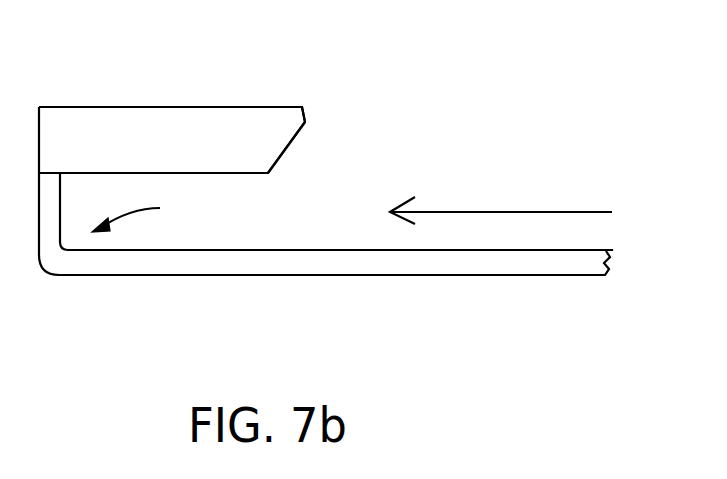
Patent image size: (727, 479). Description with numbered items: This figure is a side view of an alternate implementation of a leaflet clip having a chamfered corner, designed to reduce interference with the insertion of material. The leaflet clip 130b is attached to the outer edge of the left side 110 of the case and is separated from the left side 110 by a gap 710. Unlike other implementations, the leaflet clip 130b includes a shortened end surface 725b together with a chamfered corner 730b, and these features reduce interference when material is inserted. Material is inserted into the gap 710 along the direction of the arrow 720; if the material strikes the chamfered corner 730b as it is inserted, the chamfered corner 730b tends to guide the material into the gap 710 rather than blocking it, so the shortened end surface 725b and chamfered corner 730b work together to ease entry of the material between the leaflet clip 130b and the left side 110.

The left side of the case 110 is at (308, 275).
The leaflet clip 130b is at (103, 130).
The shortened end surface 725b is at (305, 118).
The chamfered corner 730b is at (290, 148).
The gap 710 is at (158, 208).
The arrow 720 is at (512, 212).